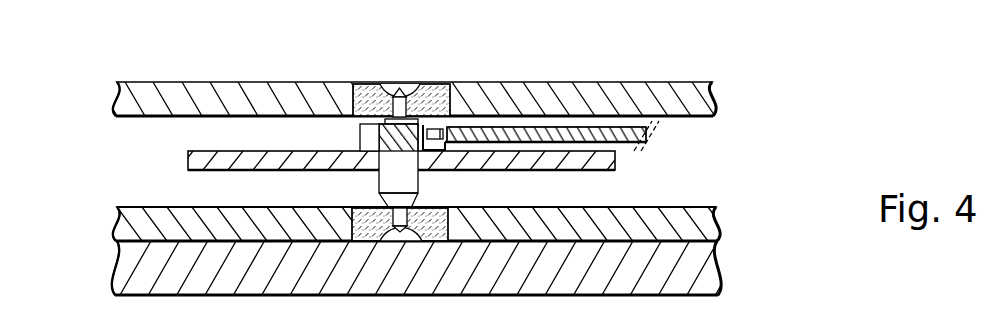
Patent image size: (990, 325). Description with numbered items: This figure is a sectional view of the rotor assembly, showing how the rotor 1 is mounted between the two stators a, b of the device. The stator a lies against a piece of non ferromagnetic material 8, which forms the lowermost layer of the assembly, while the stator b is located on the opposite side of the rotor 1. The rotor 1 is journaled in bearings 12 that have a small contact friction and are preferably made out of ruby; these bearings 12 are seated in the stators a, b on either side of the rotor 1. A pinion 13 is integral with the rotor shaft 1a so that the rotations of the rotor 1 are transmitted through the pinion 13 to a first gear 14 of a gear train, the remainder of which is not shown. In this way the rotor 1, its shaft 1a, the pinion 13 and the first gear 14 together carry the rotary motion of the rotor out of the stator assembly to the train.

The rotor 1 is at (202, 161).
The rotor shaft 1a is at (418, 183).
The piece of non ferromagnetic material 8 is at (690, 276).
The bearings 12 is at (366, 84).
The pinion 13 is at (360, 135).
The first gear 14 is at (553, 134).
The stator a is at (698, 222).
The stator b is at (700, 100).